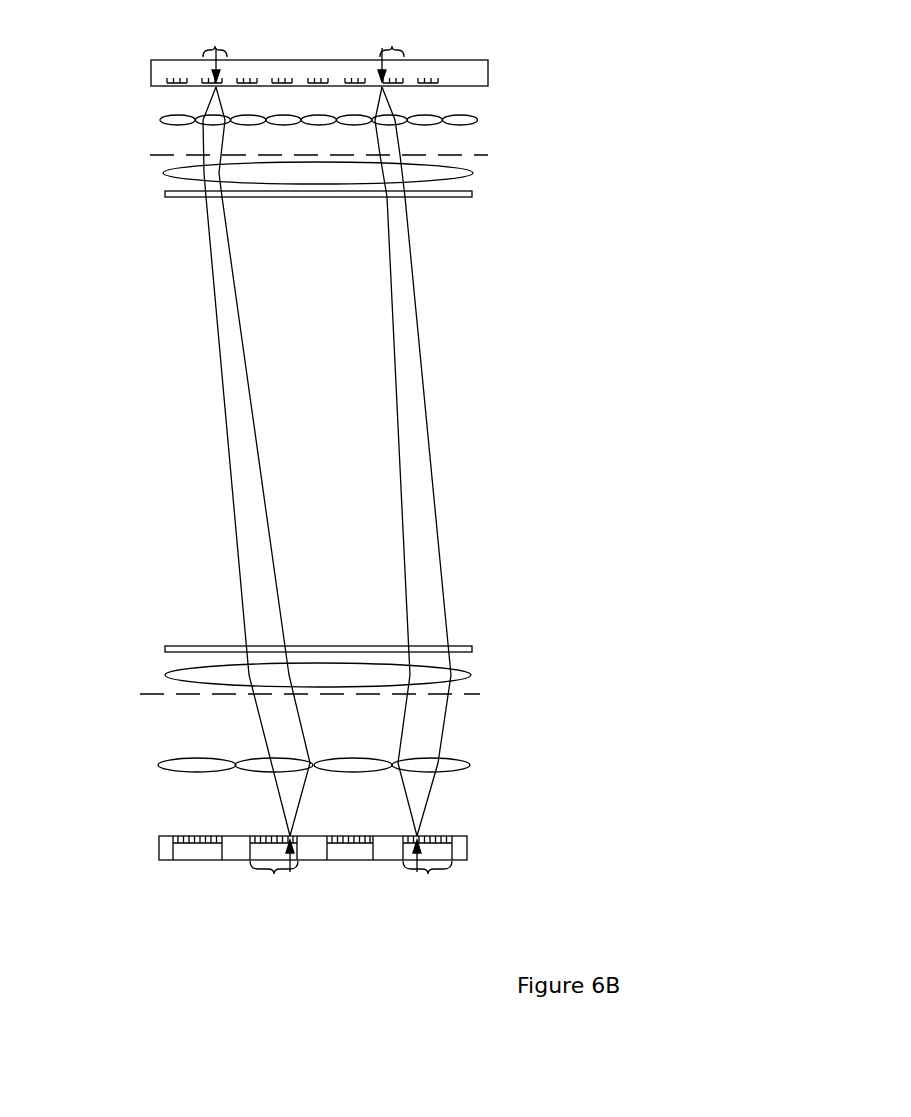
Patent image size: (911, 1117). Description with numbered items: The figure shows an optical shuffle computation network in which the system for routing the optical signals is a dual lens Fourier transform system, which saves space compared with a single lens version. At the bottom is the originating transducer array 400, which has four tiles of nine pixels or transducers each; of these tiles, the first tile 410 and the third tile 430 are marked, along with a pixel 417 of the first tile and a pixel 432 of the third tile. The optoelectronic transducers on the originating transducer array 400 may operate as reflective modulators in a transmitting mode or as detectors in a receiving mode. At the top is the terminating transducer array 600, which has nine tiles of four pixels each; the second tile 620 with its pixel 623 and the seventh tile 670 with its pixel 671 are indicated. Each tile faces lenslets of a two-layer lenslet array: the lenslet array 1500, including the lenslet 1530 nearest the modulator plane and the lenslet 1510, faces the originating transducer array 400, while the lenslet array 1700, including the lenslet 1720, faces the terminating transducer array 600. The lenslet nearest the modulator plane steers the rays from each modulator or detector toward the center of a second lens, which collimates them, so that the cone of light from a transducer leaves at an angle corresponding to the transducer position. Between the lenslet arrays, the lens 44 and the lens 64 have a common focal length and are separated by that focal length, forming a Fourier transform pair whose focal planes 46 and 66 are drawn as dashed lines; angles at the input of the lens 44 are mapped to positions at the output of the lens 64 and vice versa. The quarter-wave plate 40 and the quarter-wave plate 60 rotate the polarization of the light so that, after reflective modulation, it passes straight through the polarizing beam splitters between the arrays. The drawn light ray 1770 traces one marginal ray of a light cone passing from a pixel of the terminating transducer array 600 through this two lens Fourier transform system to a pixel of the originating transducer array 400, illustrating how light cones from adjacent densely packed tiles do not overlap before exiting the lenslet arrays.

The terminating transducer array 600 is at (488, 62).
The second tile 620 is at (215, 46).
The pixel 623 is at (203, 55).
The seventh tile 670 is at (391, 46).
The pixel 671 is at (381, 55).
The lenslet array 1700 is at (253, 201).
The lenslet 1720 is at (212, 124).
The focal plane 66 is at (478, 156).
The lens 64 is at (473, 174).
The quarter-wave plate 60 is at (472, 197).
The light ray 1770 is at (412, 170).
The quarter-wave plate 40 is at (165, 649).
The lens 44 is at (165, 675).
The focal plane 46 is at (140, 694).
The lenslet 1530 is at (260, 763).
The lenslet array 1500 is at (299, 756).
The lenslet 1510 is at (455, 760).
The originating transducer array 400 is at (159, 853).
The third tile 430 is at (270, 881).
The pixel 432 is at (290, 862).
The pixel 417 is at (417, 864).
The first tile 410 is at (431, 881).